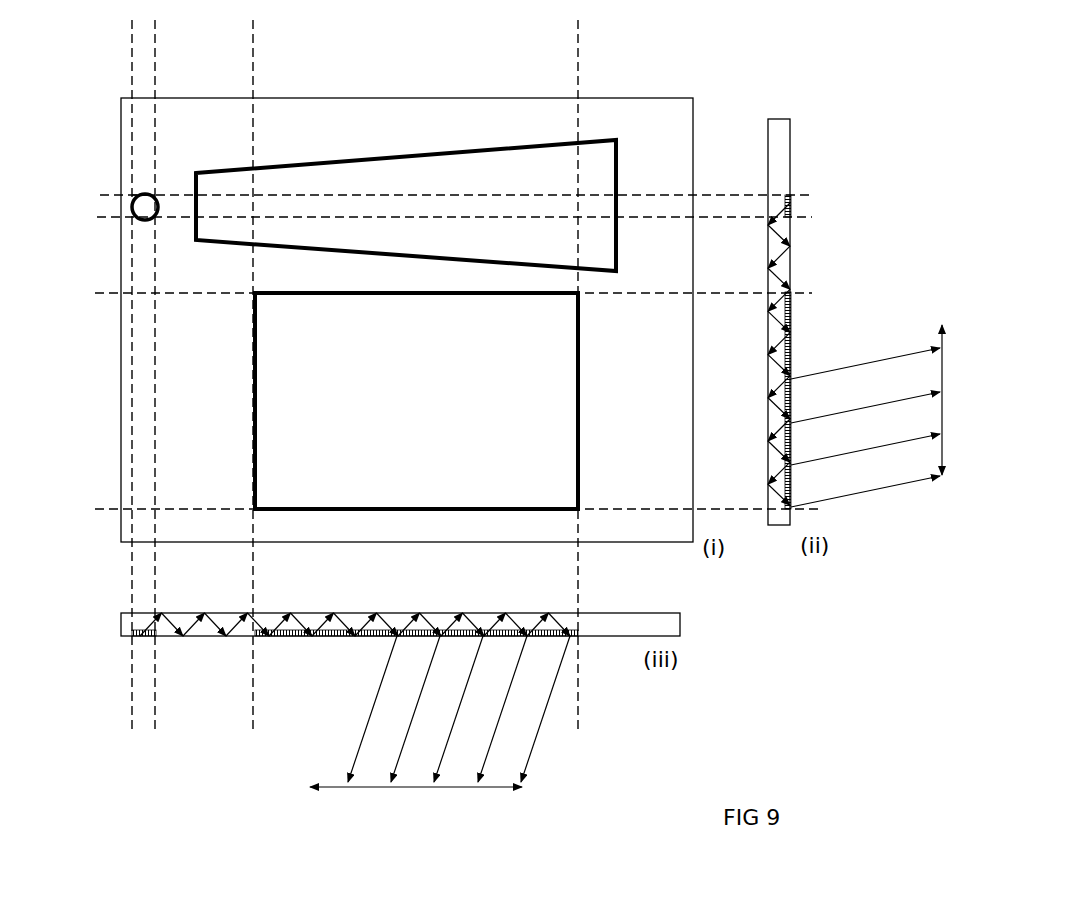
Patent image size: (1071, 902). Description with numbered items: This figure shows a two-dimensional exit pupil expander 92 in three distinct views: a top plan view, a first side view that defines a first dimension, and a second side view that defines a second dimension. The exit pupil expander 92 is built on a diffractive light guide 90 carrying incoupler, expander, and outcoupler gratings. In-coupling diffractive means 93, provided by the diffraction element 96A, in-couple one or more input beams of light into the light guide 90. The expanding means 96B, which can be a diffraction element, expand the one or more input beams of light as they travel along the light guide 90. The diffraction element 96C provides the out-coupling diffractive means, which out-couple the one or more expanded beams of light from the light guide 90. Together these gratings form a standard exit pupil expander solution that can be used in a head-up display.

The waveguide substrate 90 is at (420, 98).
The waveguide assembly 92 is at (829, 630).
The input light point 93 is at (130, 199).
The input coupler 96A is at (155, 220).
The fold grating 96B is at (616, 271).
The output grating 96C is at (578, 382).